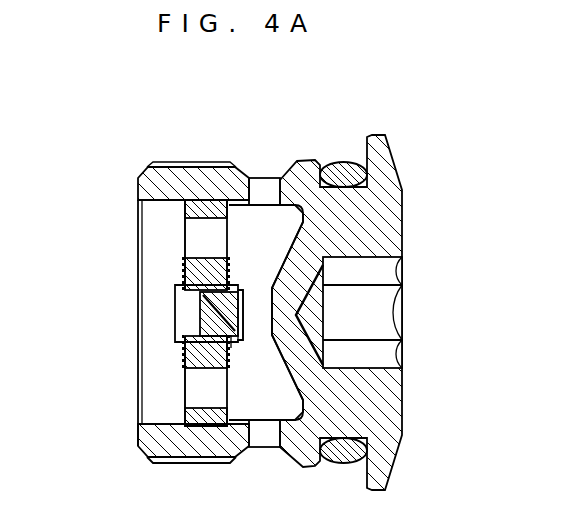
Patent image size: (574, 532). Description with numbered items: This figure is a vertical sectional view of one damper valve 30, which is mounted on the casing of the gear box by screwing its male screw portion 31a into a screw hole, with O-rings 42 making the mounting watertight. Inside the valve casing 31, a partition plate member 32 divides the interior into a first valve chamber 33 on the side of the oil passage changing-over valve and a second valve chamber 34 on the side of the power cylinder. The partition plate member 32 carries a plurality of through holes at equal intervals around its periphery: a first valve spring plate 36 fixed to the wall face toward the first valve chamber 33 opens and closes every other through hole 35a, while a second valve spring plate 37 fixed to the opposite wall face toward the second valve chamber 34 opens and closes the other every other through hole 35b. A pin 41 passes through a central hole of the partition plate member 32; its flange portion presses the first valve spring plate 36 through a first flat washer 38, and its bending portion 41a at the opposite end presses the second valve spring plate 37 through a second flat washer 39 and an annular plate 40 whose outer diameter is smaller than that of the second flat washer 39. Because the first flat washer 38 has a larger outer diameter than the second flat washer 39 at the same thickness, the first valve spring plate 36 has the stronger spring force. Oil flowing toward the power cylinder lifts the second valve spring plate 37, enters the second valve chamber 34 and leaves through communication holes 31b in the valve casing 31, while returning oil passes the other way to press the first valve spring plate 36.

The damper valve 30 is at (295, 118).
The valve casing 31 is at (393, 205).
The male screw portion 31a is at (160, 167).
The communication hole 31b is at (262, 183).
The partition plate member 32 is at (207, 200).
The first valve chamber 33 is at (176, 253).
The second valve chamber 34 is at (274, 252).
The every other through hole 35a is at (183, 405).
The other every other through hole 35b is at (183, 216).
The first valve spring plate 36 is at (183, 380).
The second valve spring plate 37 is at (240, 428).
The first flat washer 38 is at (183, 272).
The second flat washer 39 is at (230, 357).
The annular plate 40 is at (231, 338).
The pin 41 is at (178, 325).
The bending portion 41a is at (244, 310).
The O-ring 42 is at (350, 162).